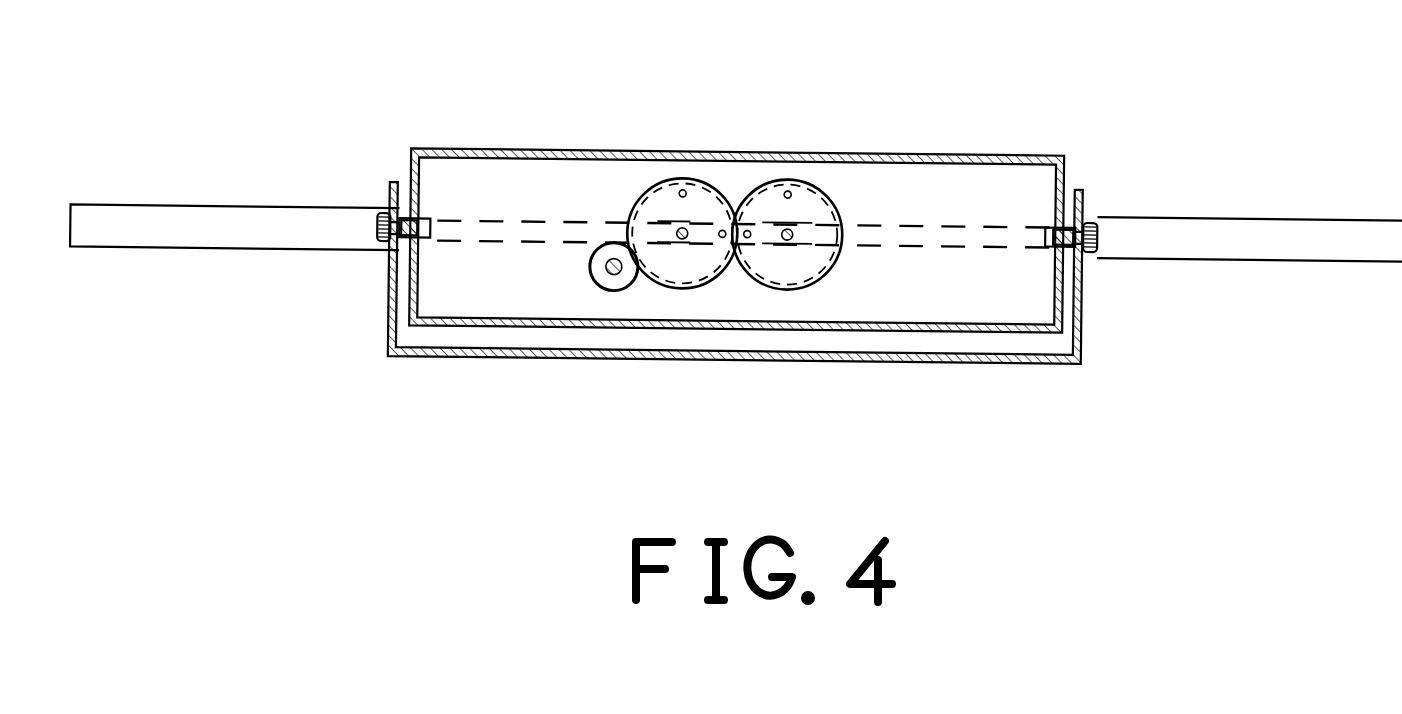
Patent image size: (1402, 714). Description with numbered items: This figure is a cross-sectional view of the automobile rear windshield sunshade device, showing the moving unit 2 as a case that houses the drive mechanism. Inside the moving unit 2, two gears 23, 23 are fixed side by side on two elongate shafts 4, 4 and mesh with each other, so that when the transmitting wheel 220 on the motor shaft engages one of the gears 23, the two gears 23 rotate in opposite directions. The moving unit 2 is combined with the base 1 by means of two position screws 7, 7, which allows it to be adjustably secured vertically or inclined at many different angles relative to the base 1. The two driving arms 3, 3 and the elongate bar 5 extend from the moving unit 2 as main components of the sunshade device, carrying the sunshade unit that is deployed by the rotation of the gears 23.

The base 1 is at (964, 361).
The moving unit 2 is at (1064, 164).
The driving arm 3 is at (938, 224).
The elongate shaft 4 is at (782, 230).
The elongate bar 5 is at (1300, 221).
The position screw 7 is at (1096, 216).
The gear 23 is at (666, 266).
The transmitting wheel 220 is at (597, 285).